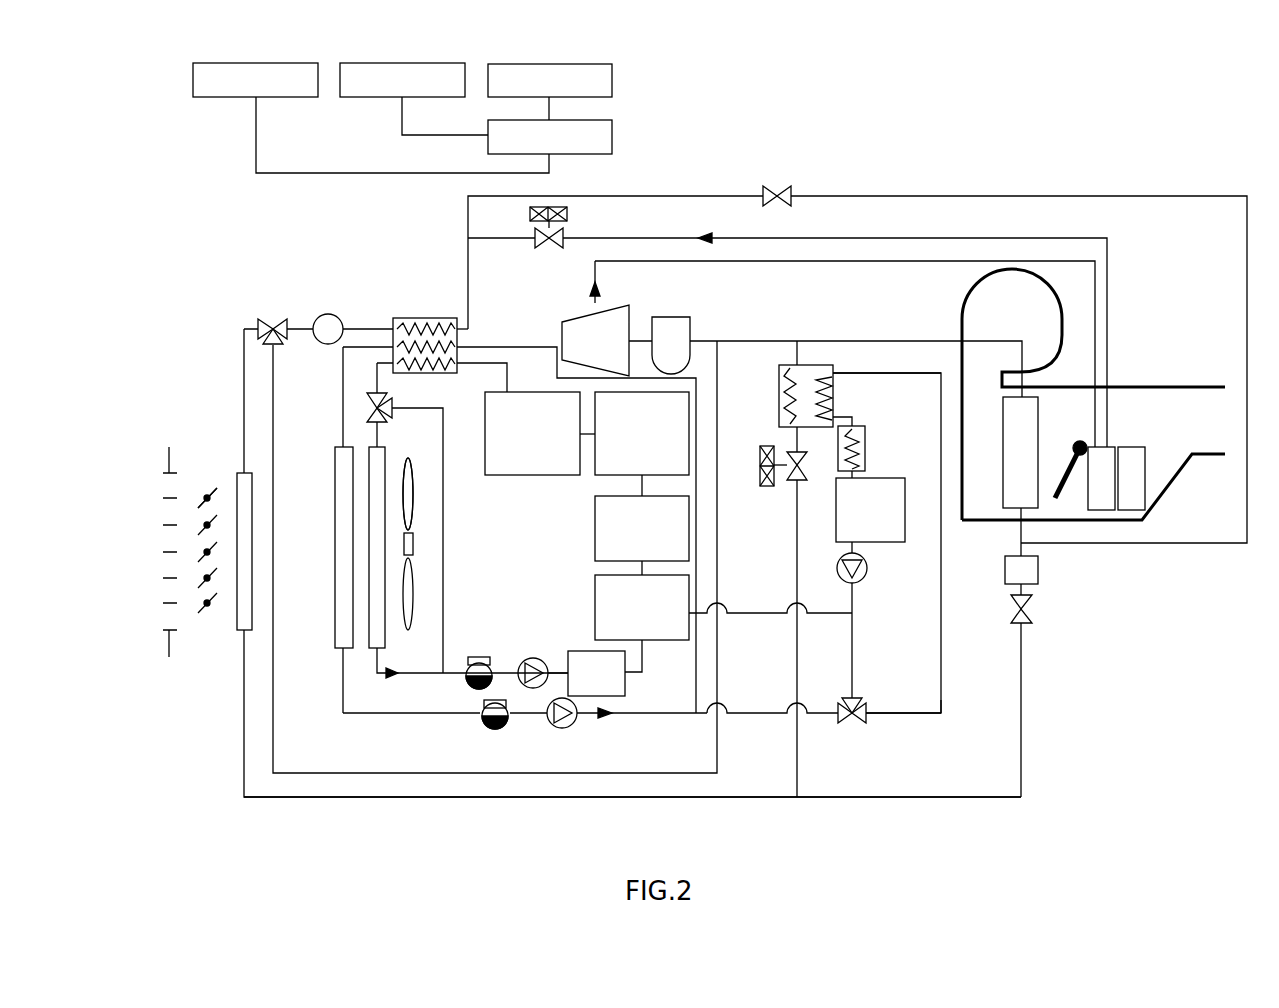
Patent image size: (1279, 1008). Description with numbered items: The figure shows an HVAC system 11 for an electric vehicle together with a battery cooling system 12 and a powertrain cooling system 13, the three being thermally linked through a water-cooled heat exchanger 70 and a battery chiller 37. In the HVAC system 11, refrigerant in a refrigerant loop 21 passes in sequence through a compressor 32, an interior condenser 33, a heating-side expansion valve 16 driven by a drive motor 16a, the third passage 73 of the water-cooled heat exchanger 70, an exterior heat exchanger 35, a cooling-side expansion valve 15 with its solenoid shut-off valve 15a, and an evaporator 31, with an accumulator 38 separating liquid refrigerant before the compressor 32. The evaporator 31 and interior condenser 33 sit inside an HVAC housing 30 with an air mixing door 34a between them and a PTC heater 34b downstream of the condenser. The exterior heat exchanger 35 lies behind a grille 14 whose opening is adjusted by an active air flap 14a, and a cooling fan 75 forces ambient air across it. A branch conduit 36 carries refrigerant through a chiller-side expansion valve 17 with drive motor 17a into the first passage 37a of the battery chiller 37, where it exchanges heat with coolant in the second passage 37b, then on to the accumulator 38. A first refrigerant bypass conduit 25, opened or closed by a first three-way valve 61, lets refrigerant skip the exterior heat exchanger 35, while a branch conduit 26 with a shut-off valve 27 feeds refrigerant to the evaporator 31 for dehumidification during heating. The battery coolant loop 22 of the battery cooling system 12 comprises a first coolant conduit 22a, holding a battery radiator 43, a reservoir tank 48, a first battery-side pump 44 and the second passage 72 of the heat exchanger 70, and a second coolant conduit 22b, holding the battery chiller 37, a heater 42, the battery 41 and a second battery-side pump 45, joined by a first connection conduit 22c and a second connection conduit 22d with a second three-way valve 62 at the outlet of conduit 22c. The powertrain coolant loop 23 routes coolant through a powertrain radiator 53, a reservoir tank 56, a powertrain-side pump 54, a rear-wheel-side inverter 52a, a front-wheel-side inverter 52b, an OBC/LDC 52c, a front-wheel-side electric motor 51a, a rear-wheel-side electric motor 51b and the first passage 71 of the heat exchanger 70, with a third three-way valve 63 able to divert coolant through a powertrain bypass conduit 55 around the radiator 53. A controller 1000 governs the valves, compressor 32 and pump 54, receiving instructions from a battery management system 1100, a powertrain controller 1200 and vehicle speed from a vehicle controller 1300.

The vehicle controller 1300 is at (256, 63).
The powertrain controller 1200 is at (402, 63).
The battery management system 1100 is at (612, 80).
The controller 1000 is at (612, 137).
The HVAC system 11 is at (1010, 180).
The battery cooling system 12 is at (972, 692).
The powertrain cooling system 13 is at (424, 696).
The grille 14 is at (148, 555).
The active air flap 14a is at (207, 478).
The cooling-side expansion valve 15 is at (1003, 578).
The shut-off valve 15a is at (1032, 611).
The heating-side expansion valve 16 is at (565, 236).
The drive motor 16a is at (530, 214).
The chiller-side expansion valve 17 is at (790, 481).
The drive motor 17a is at (762, 486).
The refrigerant loop 21 is at (905, 238).
The battery coolant loop 22 is at (889, 732).
The first coolant conduit 22a is at (343, 703).
The second coolant conduit 22b is at (912, 716).
The first connection conduit 22c is at (762, 720).
The second connection conduit 22d is at (758, 606).
The powertrain coolant loop 23 is at (557, 670).
The first refrigerant bypass conduit 25 is at (457, 797).
The branch conduit 26 is at (895, 196).
The shut-off valve 27 is at (778, 185).
The HVAC housing 30 is at (1143, 387).
The evaporator 31 is at (1010, 460).
The compressor 32 is at (566, 318).
The interior condenser 33 is at (1103, 512).
The air mixing door 34a is at (1067, 497).
The PTC heater 34b is at (1140, 488).
The exterior heat exchanger 35 is at (240, 613).
The branch conduit 36 is at (797, 660).
The battery chiller 37 is at (822, 365).
The first passage 37a is at (779, 378).
The second passage 37b is at (838, 400).
The accumulator 38 is at (690, 326).
The battery 41 is at (845, 515).
The heater 42 is at (866, 452).
The battery radiator 43 is at (335, 612).
The first battery-side pump 44 is at (574, 725).
The second battery-side pump 45 is at (868, 575).
The reservoir tank 48 is at (488, 728).
The front-wheel-side electric motor 51a is at (530, 392).
The rear-wheel-side electric motor 51b is at (600, 475).
The rear-wheel-side inverter 52a is at (595, 528).
The front-wheel-side inverter 52b is at (595, 592).
The on-board charger/low DC-DC converter 52c is at (625, 680).
The powertrain radiator 53 is at (335, 493).
The powertrain-side pump 54 is at (528, 658).
The powertrain bypass conduit 55 is at (443, 531).
The reservoir tank 56 is at (478, 657).
The first three-way valve 61 is at (273, 318).
The second three-way valve 62 is at (852, 724).
The third three-way valve 63 is at (366, 410).
The water-cooled heat exchanger 70 is at (405, 318).
The first passage 71 is at (455, 373).
The second passage 72 is at (460, 345).
The third passage 73 is at (440, 318).
The cooling fan 75 is at (413, 497).